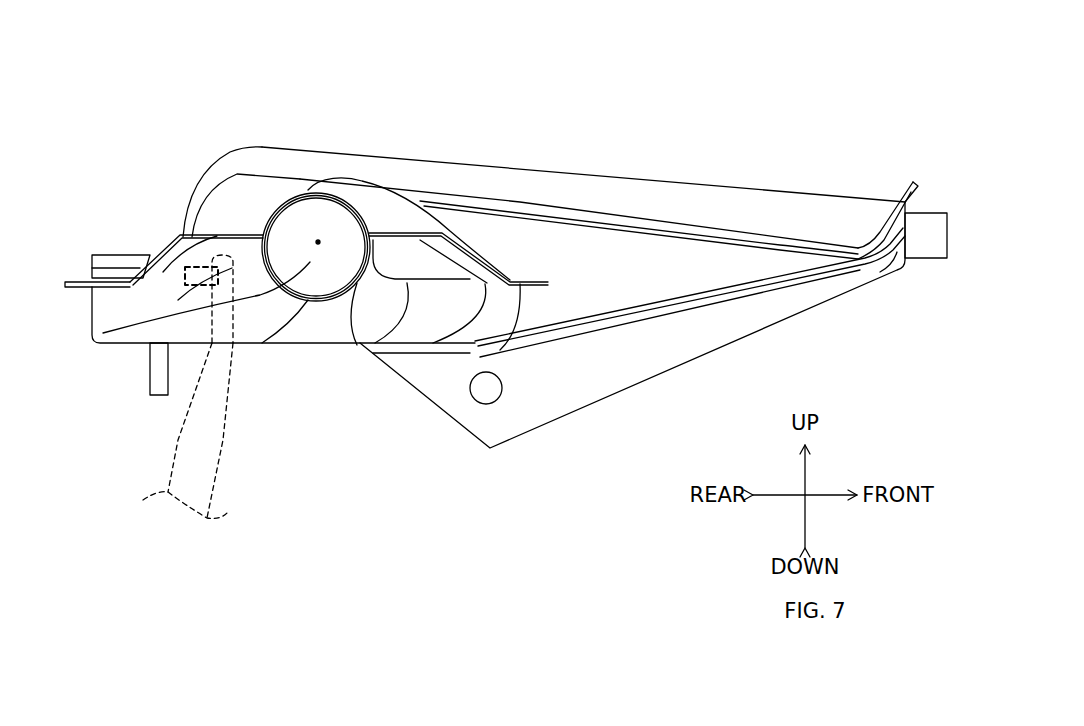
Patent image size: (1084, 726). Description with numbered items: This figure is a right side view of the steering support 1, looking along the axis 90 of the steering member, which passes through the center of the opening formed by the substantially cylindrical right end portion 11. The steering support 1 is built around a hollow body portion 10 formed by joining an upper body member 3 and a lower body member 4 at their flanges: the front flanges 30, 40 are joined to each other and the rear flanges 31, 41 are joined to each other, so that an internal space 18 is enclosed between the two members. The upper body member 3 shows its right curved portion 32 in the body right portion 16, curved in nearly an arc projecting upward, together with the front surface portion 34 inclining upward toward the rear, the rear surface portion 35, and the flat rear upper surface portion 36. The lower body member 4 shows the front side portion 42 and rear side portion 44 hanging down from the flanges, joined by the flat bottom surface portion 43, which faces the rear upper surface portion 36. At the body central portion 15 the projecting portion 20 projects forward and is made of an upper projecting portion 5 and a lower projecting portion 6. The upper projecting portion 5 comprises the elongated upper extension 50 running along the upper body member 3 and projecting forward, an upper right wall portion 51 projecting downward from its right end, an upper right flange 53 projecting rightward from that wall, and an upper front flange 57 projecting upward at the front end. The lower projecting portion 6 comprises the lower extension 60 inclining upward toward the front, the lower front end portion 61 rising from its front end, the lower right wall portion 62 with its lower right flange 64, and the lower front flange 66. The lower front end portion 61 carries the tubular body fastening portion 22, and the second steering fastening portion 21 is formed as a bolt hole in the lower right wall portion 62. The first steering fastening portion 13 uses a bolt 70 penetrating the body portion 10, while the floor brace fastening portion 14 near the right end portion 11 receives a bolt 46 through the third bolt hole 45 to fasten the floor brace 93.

The steering support 1 is at (812, 92).
The upper body member 3 is at (346, 170).
The lower body member 4 is at (298, 352).
The upper projecting portion 5 is at (580, 146).
The lower projecting portion 6 is at (682, 402).
The body portion 10 is at (501, 303).
The projecting portion 20 is at (653, 297).
The right end portion 11 is at (357, 346).
The first steering fastening portion 13 is at (154, 420).
The floor brace fastening portion 14 is at (200, 292).
The body central portion 15 is at (562, 283).
The body right portion 16 is at (218, 128).
The internal space 18 is at (304, 230).
The second steering fastening portion 21 is at (487, 392).
The body fastening portion 22 is at (930, 258).
The front flange 30 is at (546, 278).
The rear flange 31 is at (92, 283).
The right curved portion 32 is at (292, 180).
The front surface portion 34 is at (492, 233).
The rear surface portion 35 is at (172, 208).
The rear upper surface portion 36 is at (120, 262).
The front flange 40 is at (548, 284).
The rear flange 41 is at (150, 278).
The front side portion 42 is at (497, 315).
The bottom surface portion 43 is at (336, 348).
The rear side portion 44 is at (128, 322).
The third bolt hole 45 is at (222, 254).
The bolt 46 is at (222, 292).
The upper extension 50 is at (490, 163).
The upper right wall portion 51 is at (457, 183).
The upper right flange 53 is at (697, 237).
The upper front flange 57 is at (898, 200).
The lower extension 60 is at (718, 355).
The lower front end portion 61 is at (897, 262).
The lower right wall portion 62 is at (770, 315).
The lower right flange 64 is at (613, 316).
The lower front flange 66 is at (915, 192).
The bolt 70 is at (163, 393).
The axis 90 is at (318, 243).
The floor brace 93 is at (210, 468).